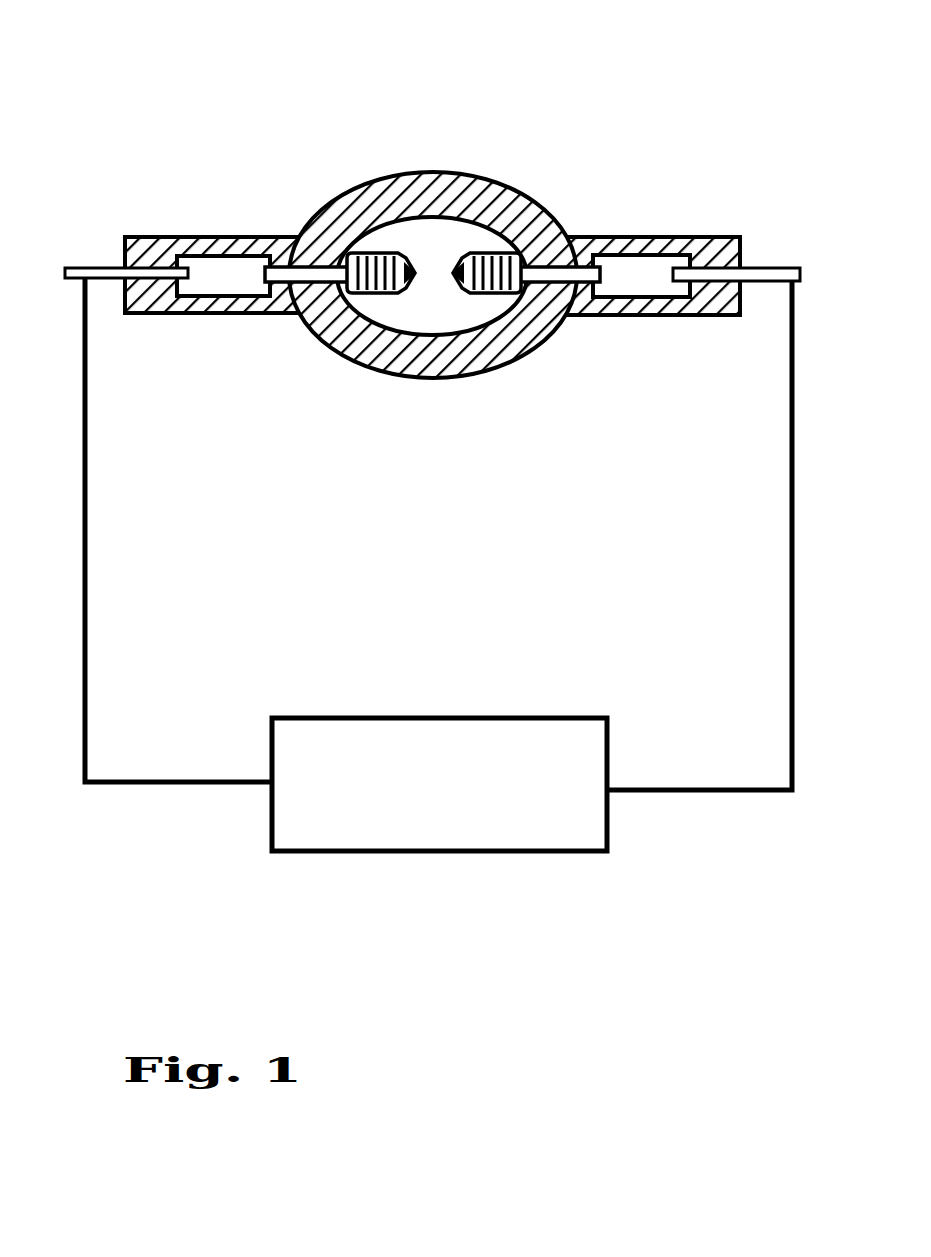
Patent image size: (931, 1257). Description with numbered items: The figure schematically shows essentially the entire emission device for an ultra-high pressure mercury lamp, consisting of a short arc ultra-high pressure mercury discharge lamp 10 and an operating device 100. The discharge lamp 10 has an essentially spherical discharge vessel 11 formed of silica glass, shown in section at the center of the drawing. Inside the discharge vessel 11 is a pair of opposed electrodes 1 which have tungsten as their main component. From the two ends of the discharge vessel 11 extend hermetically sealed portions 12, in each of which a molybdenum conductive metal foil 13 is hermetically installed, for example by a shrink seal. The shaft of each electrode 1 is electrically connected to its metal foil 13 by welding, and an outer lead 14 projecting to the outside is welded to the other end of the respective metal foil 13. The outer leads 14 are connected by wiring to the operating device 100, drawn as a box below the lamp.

The discharge lamp 10 is at (431, 257).
The electrode 1 is at (378, 247).
The discharge vessel 11 is at (441, 385).
The hermetically sealed portion 12 is at (217, 327).
The metal foil 13 is at (212, 262).
The outer lead 14 is at (92, 265).
The operating device 100 is at (445, 717).